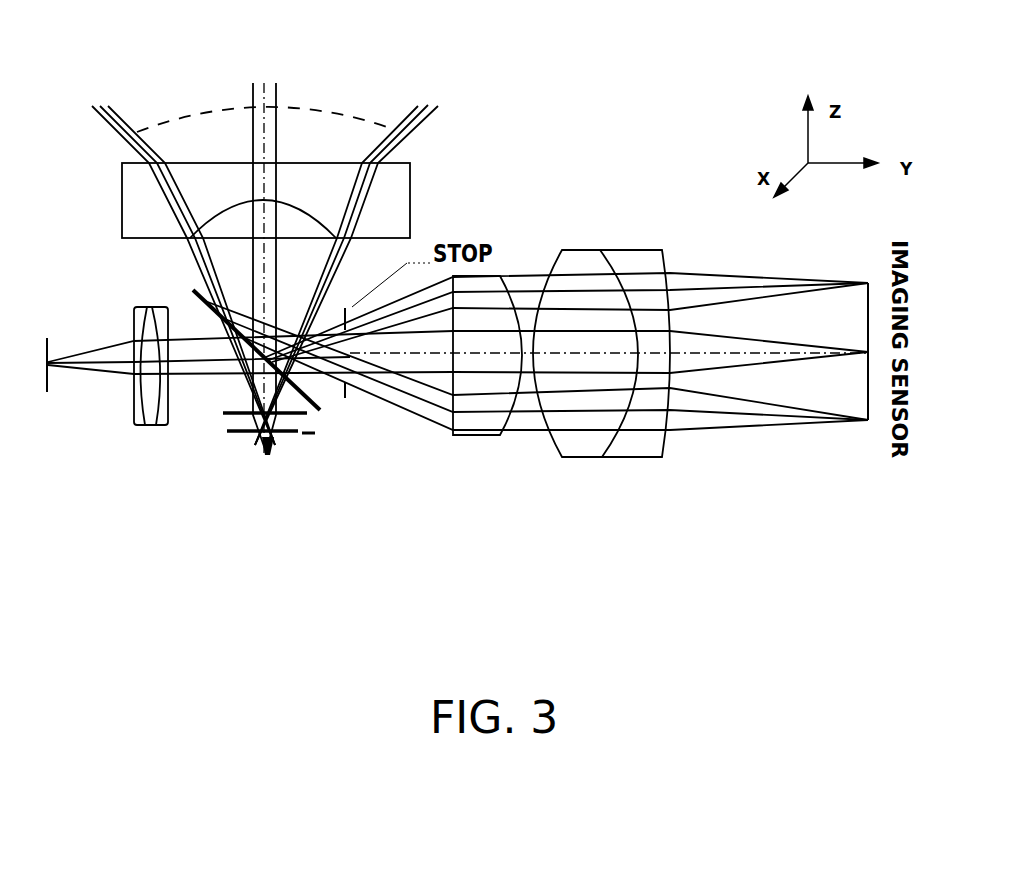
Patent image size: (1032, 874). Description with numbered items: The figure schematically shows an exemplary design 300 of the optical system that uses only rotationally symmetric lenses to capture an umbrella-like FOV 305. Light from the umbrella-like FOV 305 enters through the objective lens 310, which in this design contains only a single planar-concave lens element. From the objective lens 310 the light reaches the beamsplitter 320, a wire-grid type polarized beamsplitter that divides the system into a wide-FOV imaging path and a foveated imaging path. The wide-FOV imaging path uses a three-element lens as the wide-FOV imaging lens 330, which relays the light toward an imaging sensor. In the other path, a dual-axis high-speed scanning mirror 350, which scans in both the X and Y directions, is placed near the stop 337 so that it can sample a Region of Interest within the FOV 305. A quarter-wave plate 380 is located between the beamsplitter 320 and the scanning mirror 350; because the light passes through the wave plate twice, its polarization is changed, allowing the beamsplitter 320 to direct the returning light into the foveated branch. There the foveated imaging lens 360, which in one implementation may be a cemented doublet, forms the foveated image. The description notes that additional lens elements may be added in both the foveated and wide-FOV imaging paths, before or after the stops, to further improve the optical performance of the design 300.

The exemplary design 300 is at (563, 157).
The umbrella-like FOV 305 is at (310, 110).
The objective lens 310 is at (410, 187).
The beamsplitter 320 is at (193, 291).
The wide-FOV imaging lens 330 is at (553, 248).
The stop 337 is at (223, 438).
The dual-axis high-speed scanning mirror 350 is at (272, 444).
The foveated imaging lens 360 is at (145, 410).
The quarter-wave plate 380 is at (303, 413).